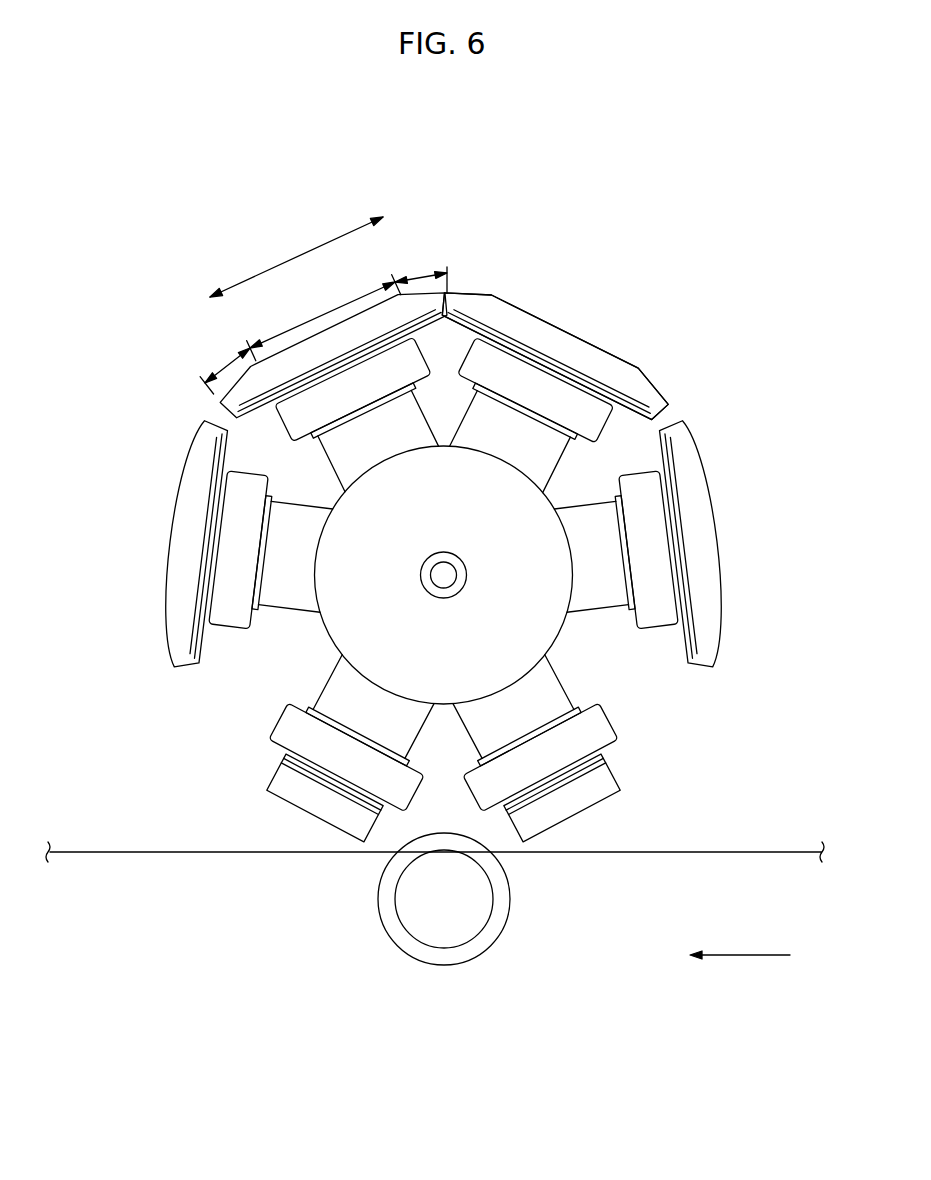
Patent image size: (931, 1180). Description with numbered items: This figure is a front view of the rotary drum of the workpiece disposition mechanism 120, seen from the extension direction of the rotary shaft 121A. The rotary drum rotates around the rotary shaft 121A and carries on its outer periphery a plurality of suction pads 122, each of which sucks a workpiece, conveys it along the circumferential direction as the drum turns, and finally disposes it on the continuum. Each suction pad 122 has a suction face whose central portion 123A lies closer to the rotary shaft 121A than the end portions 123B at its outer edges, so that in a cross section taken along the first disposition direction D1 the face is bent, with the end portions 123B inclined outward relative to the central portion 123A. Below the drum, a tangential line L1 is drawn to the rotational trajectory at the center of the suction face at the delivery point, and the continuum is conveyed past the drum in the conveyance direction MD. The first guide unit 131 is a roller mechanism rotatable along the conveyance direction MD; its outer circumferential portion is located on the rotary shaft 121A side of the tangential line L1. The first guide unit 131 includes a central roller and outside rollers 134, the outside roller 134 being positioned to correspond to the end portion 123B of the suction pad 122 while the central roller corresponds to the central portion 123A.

The workpiece disposition mechanism 120 is at (497, 556).
The rotary shaft 121A is at (427, 572).
The suction pad 122 is at (530, 400).
The central portion 123A is at (324, 318).
The end portion 123B is at (308, 318).
The first guide unit 131 is at (447, 933).
The outside roller 134 is at (514, 900).
The tangential line L1 is at (737, 851).
The first disposition direction D1 is at (296, 257).
The conveyance direction MD is at (740, 942).